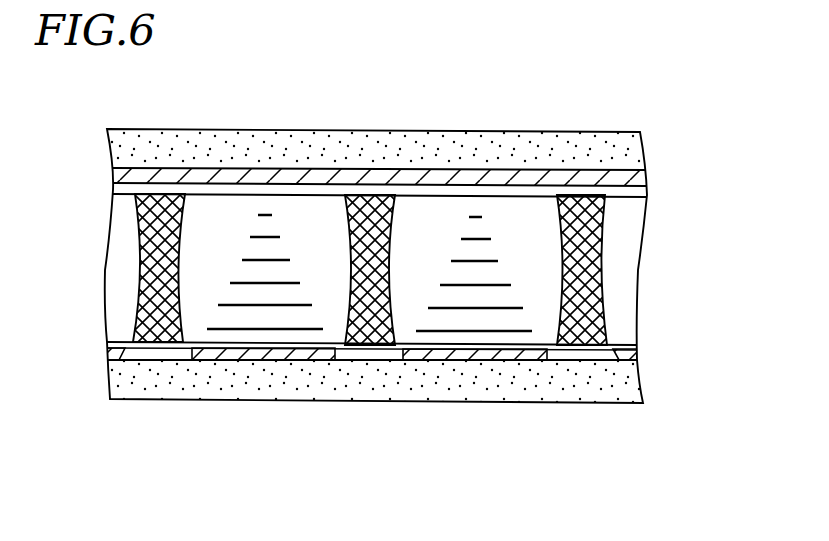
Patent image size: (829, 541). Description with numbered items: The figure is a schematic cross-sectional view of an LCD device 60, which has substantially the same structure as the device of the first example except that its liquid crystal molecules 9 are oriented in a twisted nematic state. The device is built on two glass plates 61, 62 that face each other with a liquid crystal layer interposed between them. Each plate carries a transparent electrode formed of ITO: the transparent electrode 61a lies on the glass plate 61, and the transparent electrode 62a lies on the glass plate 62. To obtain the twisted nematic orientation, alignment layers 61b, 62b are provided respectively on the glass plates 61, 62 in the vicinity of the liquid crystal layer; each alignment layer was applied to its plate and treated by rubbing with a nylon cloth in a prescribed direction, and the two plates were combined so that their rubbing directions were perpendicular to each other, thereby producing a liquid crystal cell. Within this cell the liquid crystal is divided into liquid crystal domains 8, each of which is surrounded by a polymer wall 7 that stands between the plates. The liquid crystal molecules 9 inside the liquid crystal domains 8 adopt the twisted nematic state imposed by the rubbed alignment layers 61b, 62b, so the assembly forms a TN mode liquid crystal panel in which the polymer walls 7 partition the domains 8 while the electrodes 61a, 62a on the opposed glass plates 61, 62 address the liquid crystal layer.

The LCD device 60 is at (668, 152).
The glass plate 61 is at (243, 145).
The transparent electrode 61a is at (357, 178).
The alignment layer 61b is at (442, 192).
The polymer wall 7 is at (162, 220).
The liquid crystal domain 8 is at (510, 220).
The liquid crystal molecules 9 is at (510, 332).
The alignment layer 62b is at (163, 348).
The transparent electrode 62a is at (277, 350).
The glass plate 62 is at (373, 383).